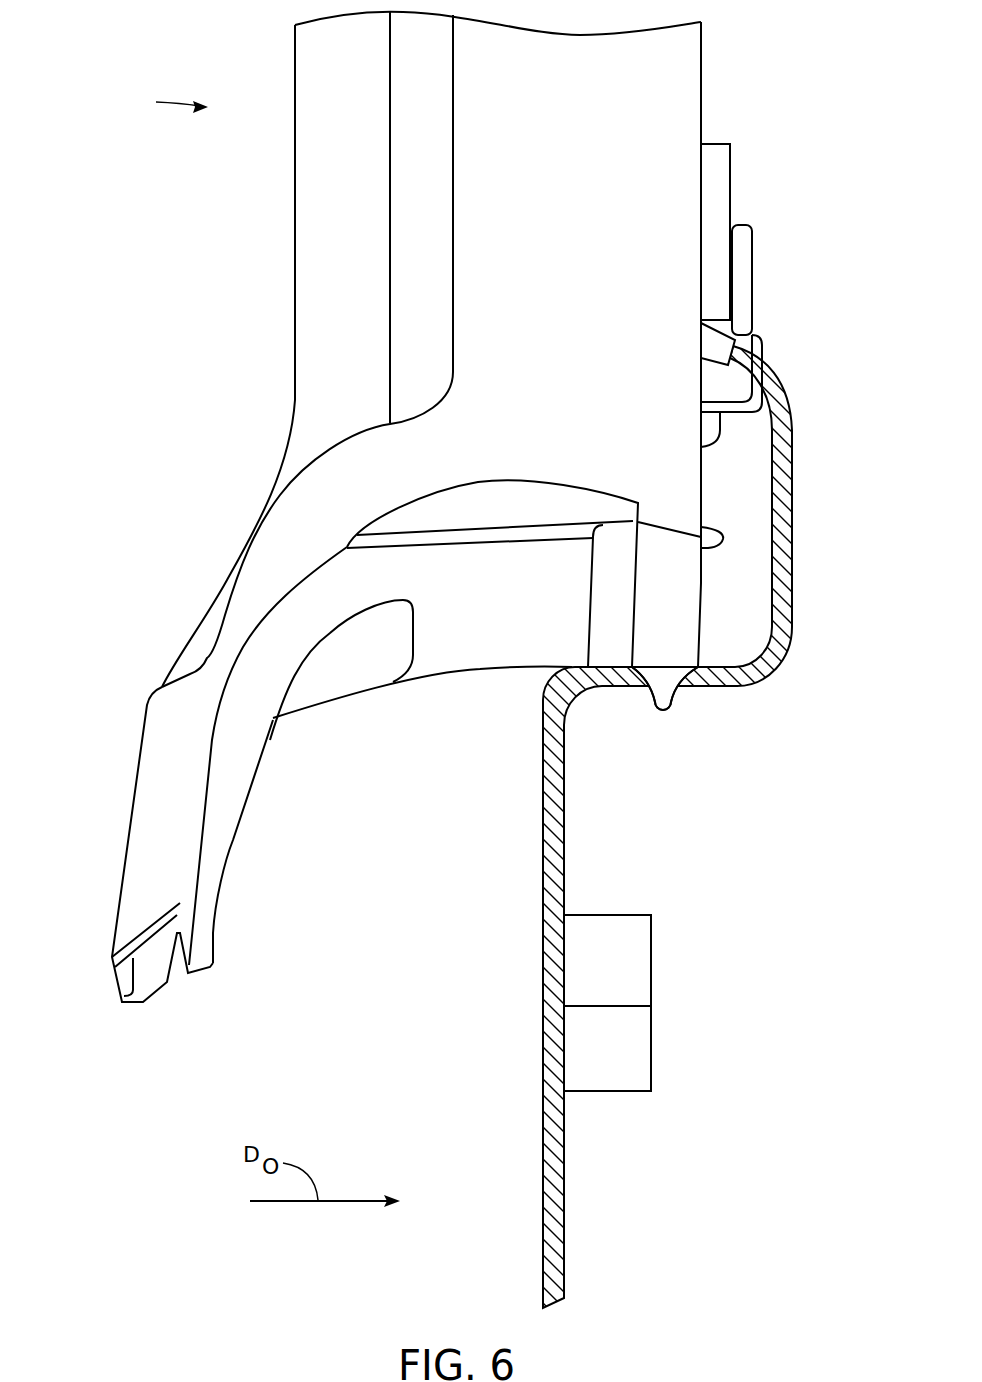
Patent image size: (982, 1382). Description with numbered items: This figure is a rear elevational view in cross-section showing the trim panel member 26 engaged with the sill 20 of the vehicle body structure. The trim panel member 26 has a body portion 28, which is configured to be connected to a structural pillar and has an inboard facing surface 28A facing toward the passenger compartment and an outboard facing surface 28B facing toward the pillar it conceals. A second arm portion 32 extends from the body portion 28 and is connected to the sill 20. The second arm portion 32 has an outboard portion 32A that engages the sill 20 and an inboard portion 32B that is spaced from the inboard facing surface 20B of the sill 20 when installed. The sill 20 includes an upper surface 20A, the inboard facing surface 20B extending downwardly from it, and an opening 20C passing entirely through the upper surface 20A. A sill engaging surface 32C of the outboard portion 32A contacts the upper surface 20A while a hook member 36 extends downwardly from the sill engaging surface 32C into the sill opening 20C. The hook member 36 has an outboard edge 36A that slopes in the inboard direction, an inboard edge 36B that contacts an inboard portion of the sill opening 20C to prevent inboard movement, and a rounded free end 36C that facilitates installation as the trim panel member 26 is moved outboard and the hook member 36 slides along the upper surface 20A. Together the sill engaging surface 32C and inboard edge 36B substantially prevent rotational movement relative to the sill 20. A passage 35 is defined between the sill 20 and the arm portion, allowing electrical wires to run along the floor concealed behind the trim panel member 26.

The sill 20 is at (565, 838).
The upper surface 20A is at (718, 667).
The inboard facing surface 20B is at (543, 962).
The opening 20C is at (697, 677).
The trim panel member 26 is at (165, 104).
The body portion 28 is at (295, 175).
The inboard facing surface 28A is at (295, 297).
The outboard facing surface 28B is at (701, 83).
The second arm portion 32 is at (193, 617).
The outboard portion 32A is at (701, 584).
The inboard portion 32B is at (120, 868).
The sill engaging surface 32C is at (543, 729).
The passage 35 is at (320, 907).
The hook member 36 is at (670, 694).
The outboard edge 36A is at (680, 693).
The inboard edge 36B is at (652, 700).
The free end 36C is at (662, 714).